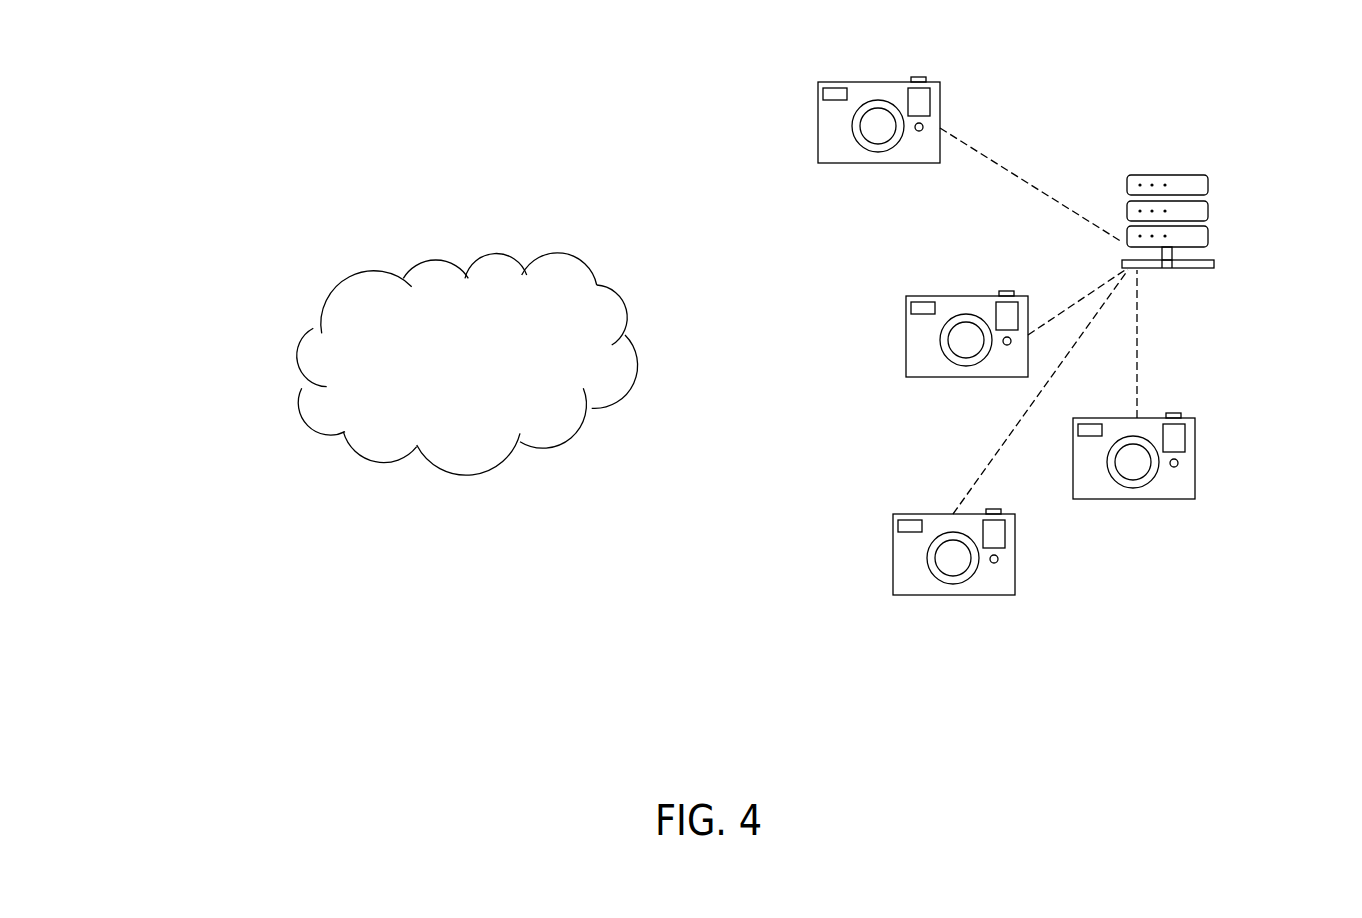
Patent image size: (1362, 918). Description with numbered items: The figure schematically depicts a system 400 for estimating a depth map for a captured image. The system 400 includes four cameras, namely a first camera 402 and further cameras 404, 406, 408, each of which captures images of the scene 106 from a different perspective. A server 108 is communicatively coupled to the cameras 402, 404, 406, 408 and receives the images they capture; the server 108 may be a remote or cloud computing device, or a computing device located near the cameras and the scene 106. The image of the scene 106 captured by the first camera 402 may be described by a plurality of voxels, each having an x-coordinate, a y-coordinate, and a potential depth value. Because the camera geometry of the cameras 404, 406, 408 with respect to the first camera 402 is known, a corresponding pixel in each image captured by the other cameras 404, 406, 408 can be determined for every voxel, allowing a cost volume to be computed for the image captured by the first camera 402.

The scene 106 is at (396, 289).
The server 108 is at (1208, 185).
The system 400 is at (1315, 758).
The first camera 402 is at (878, 82).
The camera 404 is at (964, 296).
The camera 406 is at (1115, 418).
The camera 408 is at (928, 514).